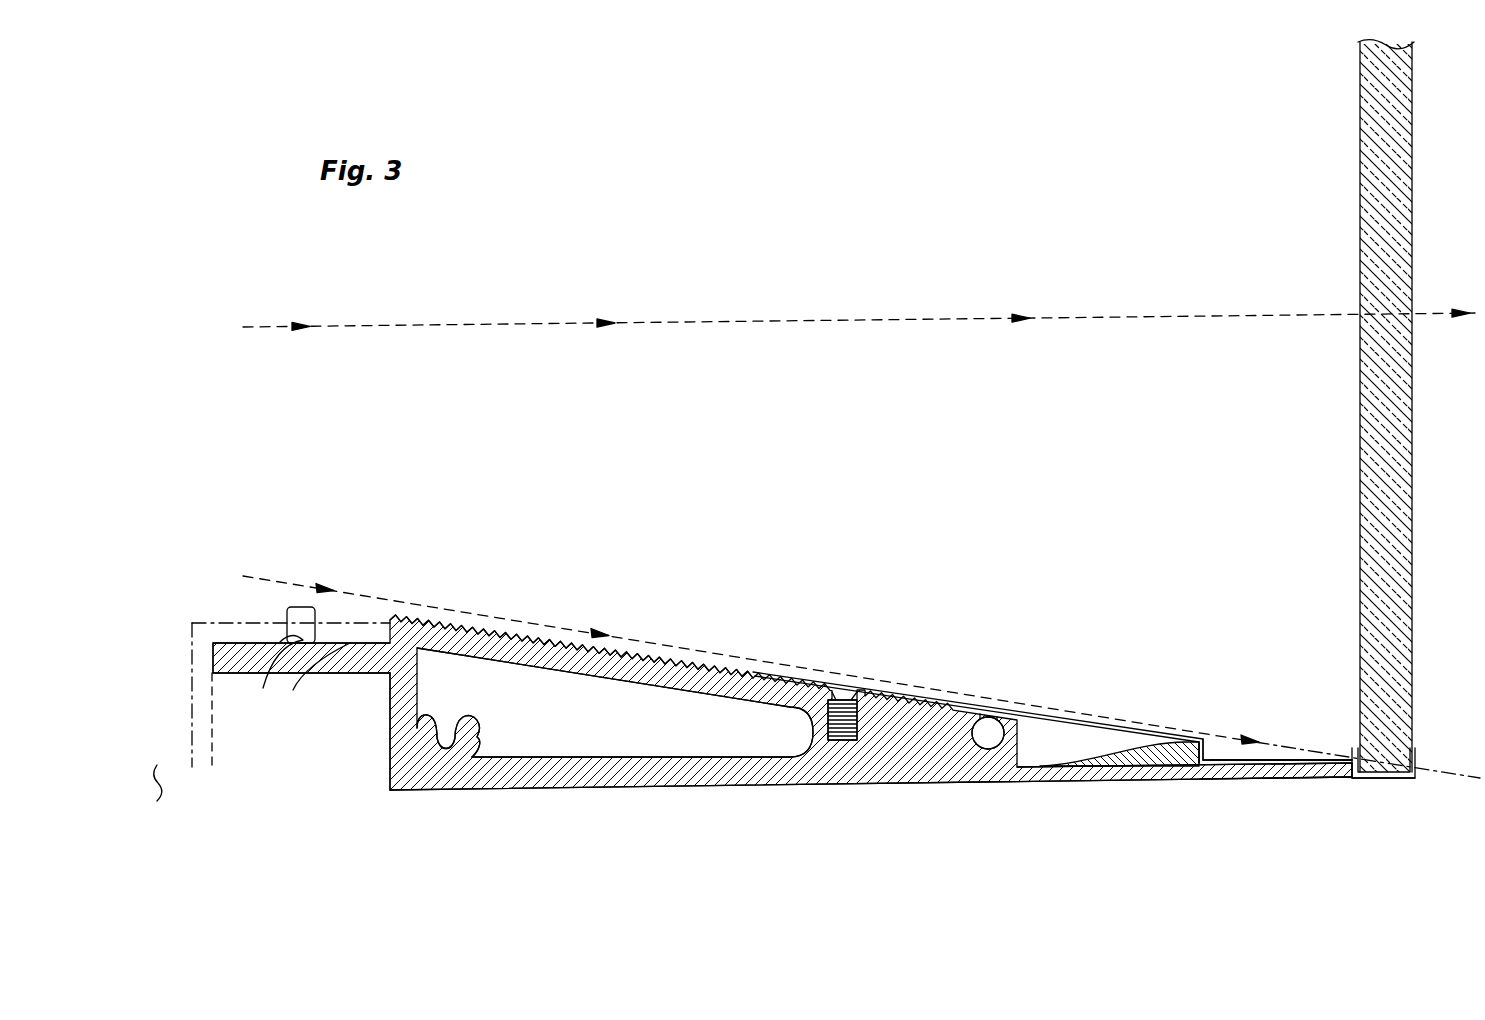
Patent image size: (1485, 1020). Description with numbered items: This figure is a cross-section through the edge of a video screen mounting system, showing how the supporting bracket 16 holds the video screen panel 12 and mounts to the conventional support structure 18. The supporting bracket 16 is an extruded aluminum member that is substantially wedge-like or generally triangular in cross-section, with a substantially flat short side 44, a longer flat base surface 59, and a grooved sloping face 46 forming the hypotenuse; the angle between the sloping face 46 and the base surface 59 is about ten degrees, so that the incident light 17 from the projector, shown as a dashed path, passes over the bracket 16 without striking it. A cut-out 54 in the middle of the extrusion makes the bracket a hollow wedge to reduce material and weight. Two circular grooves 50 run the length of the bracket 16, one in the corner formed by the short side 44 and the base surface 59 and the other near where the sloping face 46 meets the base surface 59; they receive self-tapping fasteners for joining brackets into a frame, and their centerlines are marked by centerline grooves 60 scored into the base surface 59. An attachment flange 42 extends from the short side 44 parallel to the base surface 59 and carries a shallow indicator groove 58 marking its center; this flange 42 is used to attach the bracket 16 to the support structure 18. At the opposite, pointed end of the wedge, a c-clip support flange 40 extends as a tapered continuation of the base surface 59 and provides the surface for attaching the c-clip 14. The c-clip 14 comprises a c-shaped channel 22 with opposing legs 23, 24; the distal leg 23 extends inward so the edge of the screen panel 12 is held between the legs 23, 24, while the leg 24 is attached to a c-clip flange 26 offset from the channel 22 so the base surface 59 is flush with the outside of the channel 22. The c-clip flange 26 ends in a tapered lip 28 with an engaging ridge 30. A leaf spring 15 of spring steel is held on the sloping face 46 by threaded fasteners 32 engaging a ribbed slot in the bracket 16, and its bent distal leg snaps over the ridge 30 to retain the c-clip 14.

The video screen panel 12 is at (1412, 460).
The c-clip 14 is at (1282, 755).
The leaf spring 15 is at (1070, 716).
The supporting bracket 16 is at (830, 790).
The incident light 17 is at (966, 692).
The support structure 18 is at (212, 767).
The c-shaped channel 22 is at (1380, 779).
The distal flange or leg 23 is at (1417, 752).
The leg 24 is at (1345, 778).
The c-clip flange 26 is at (1328, 758).
The tapered lip 28 is at (1062, 768).
The ridge 30 is at (1200, 752).
The threaded fastener 32 is at (858, 690).
The c-clip support flange 40 is at (1268, 765).
The attachment flange 42 is at (352, 675).
The short side 44 is at (390, 760).
The sloping face 46 is at (668, 662).
The circular groove 50 is at (462, 748).
The cut-out 54 is at (585, 740).
The indicator groove 58 is at (266, 690).
The base surface 59 is at (1235, 778).
The centerline groove 60 is at (432, 790).